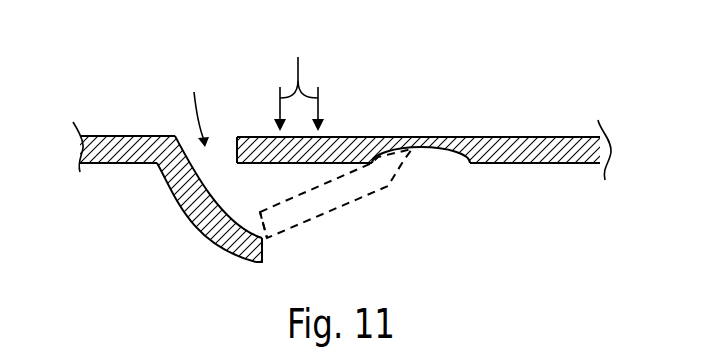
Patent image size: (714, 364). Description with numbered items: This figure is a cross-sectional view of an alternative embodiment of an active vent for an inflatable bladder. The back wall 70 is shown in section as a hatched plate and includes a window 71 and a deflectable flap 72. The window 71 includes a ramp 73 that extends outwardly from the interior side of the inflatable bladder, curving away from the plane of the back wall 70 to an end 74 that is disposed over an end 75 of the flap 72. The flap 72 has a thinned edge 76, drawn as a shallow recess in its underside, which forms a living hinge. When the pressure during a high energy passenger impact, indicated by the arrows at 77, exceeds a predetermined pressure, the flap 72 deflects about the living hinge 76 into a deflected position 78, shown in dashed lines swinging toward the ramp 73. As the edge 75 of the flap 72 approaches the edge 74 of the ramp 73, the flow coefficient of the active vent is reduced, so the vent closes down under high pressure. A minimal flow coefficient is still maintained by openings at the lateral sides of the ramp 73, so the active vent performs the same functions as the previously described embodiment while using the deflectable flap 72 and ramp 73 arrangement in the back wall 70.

The back wall 70 is at (342, 181).
The window 71 is at (197, 109).
The deflectable flap 72 is at (337, 137).
The ramp 73 is at (193, 218).
The end of ramp 74 is at (264, 257).
The end of flap 75 is at (237, 137).
The thinned edge 76 is at (446, 151).
The pressure 77 is at (299, 83).
The deflected position 78 is at (328, 214).